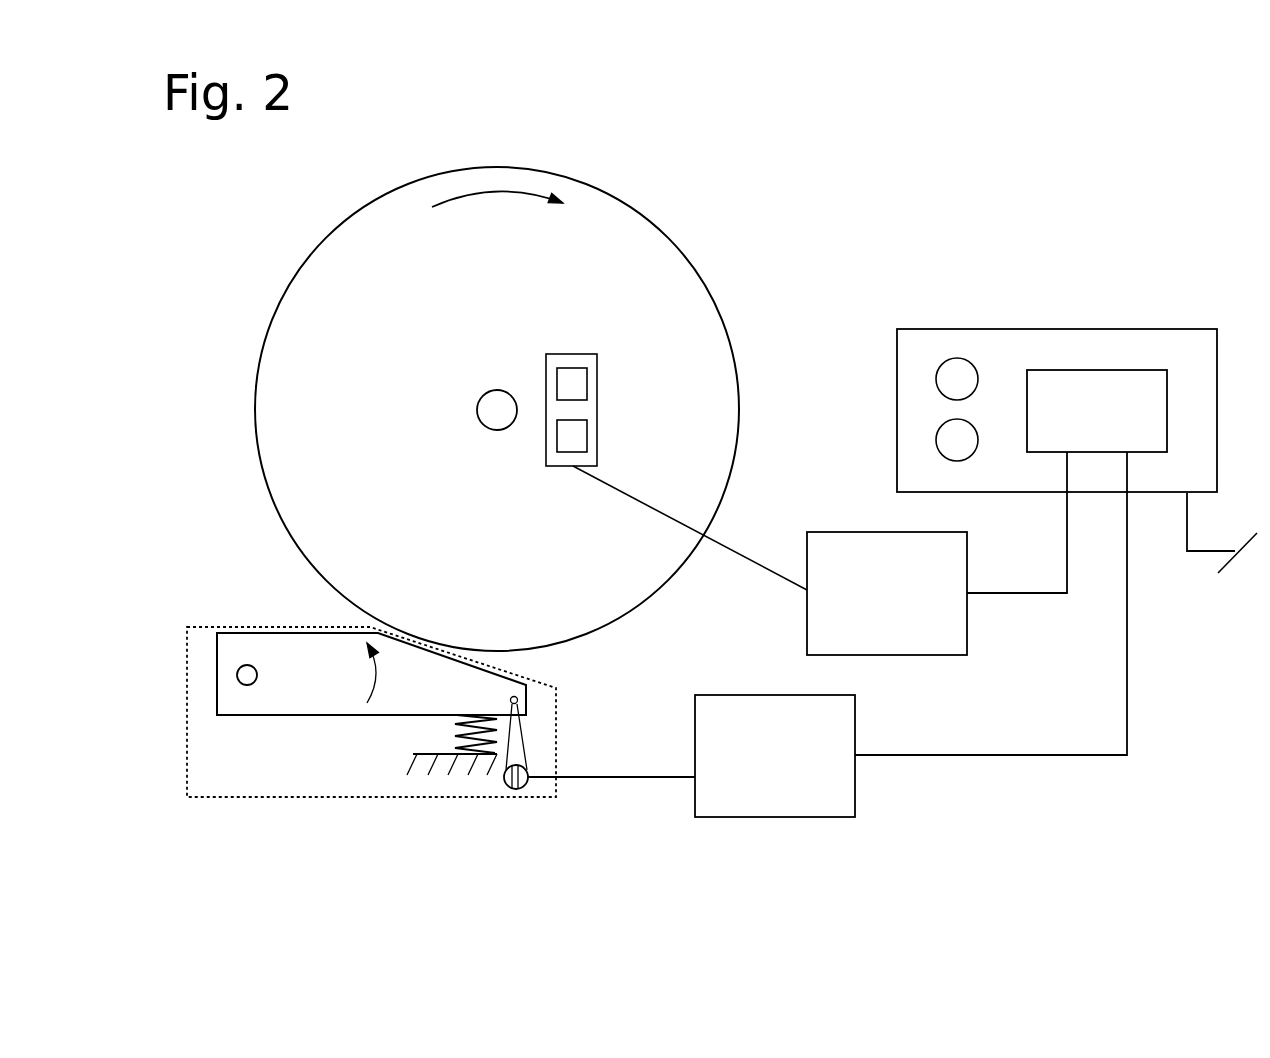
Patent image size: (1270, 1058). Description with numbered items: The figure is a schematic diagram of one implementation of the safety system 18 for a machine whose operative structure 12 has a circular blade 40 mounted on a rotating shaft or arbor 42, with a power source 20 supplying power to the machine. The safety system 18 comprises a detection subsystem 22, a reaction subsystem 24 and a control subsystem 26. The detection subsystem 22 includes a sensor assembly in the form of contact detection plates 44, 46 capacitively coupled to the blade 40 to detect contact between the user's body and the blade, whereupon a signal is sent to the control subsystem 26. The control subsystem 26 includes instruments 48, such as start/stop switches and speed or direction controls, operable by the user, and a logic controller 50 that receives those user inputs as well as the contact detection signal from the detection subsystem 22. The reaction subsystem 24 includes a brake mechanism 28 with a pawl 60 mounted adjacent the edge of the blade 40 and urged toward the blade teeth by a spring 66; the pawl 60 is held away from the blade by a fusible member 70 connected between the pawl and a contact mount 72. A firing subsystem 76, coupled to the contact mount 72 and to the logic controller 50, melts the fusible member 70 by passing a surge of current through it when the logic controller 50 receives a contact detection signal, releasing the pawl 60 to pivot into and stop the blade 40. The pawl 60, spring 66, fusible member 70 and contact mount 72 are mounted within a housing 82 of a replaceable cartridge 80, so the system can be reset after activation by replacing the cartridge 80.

The operative structure 12 is at (529, 381).
The safety system 18 is at (1017, 321).
The power source 20 is at (1226, 547).
The detection subsystem 22 is at (944, 579).
The reaction subsystem 24 is at (827, 680).
The control subsystem 26 is at (1097, 329).
The brake mechanism 28 is at (395, 709).
The circular blade 40 is at (404, 282).
The arbor 42 is at (487, 415).
The contact detection plate 44 is at (582, 380).
The contact detection plate 46 is at (582, 430).
The instruments 48 is at (897, 409).
The logic controller 50 is at (1146, 416).
The pawl 60 is at (272, 645).
The spring 66 is at (430, 737).
The fusible member 70 is at (525, 752).
The contact mount 72 is at (512, 782).
The firing subsystem 76 is at (834, 740).
The replaceable cartridge 80 is at (381, 734).
The housing 82 is at (287, 800).